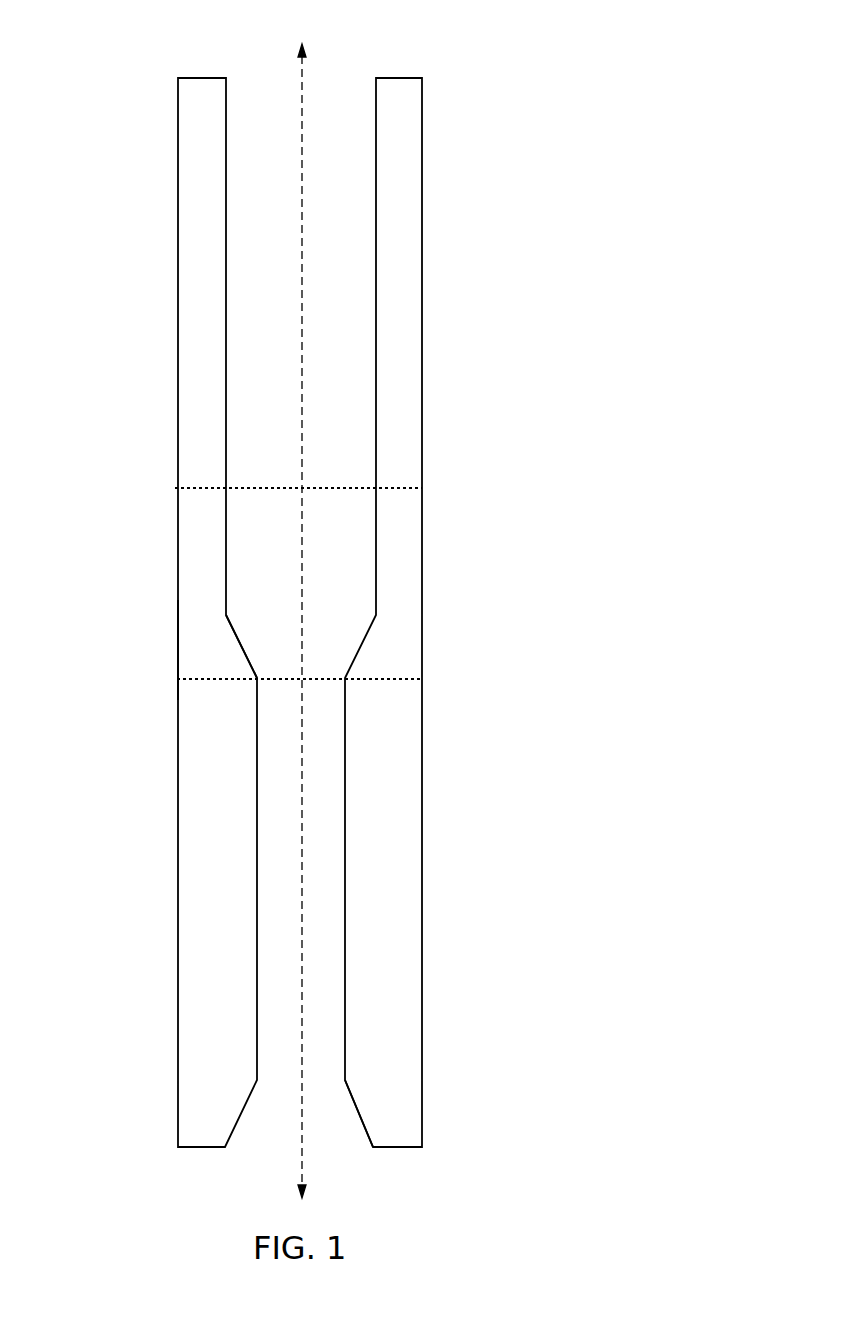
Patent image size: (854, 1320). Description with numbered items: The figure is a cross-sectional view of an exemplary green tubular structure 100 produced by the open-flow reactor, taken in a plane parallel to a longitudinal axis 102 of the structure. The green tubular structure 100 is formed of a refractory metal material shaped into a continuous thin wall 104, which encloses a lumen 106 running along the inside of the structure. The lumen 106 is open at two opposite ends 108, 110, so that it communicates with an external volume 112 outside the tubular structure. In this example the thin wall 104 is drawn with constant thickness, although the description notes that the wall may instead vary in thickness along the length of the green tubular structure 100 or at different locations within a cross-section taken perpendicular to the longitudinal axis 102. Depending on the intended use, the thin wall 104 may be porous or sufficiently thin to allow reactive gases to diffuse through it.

The green tubular structure 100 is at (342, 605).
The longitudinal axis 102 is at (352, 617).
The thin wall 104 is at (152, 632).
The lumen 106 is at (422, 612).
The end 108 is at (417, 1133).
The end 110 is at (179, 612).
The external volume 112 is at (272, 45).